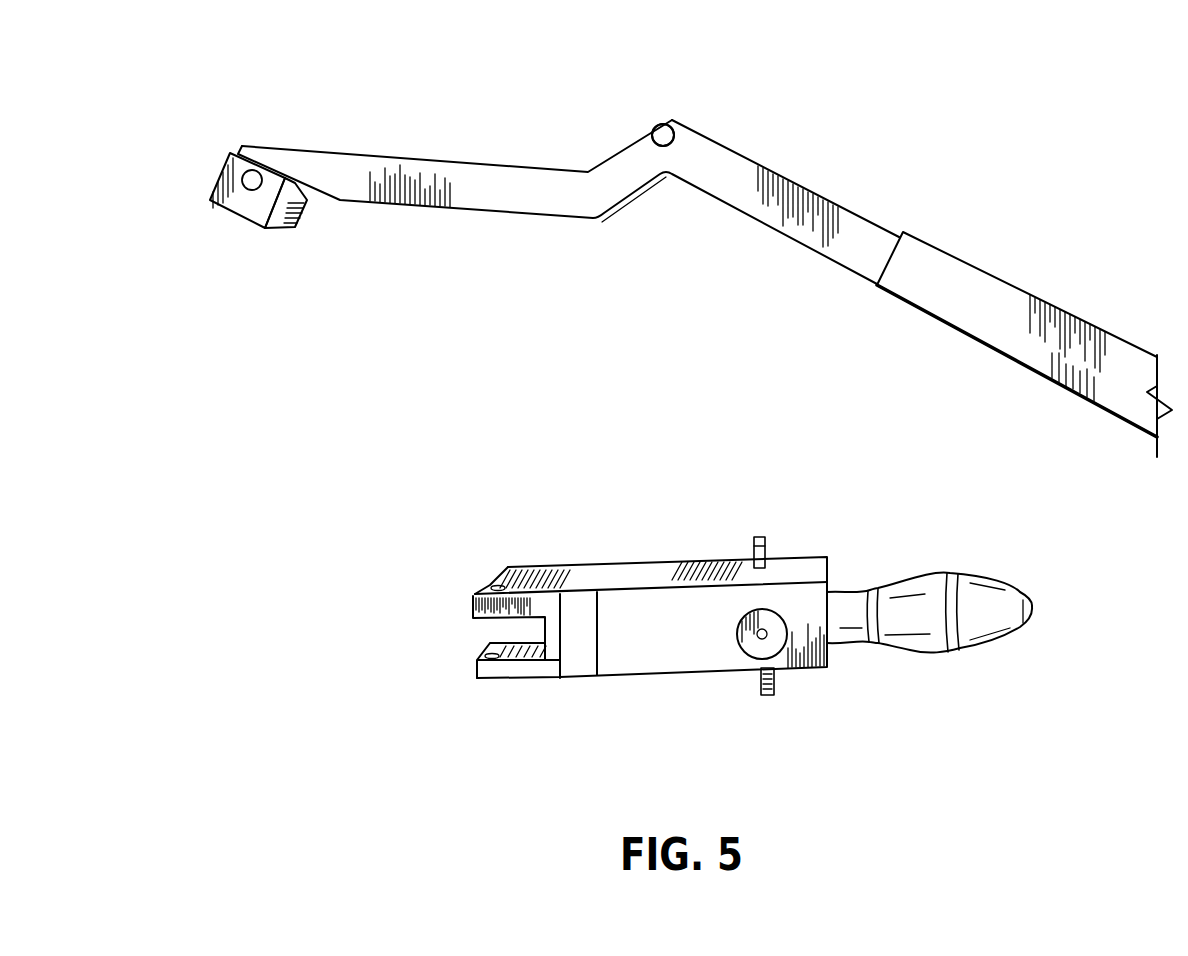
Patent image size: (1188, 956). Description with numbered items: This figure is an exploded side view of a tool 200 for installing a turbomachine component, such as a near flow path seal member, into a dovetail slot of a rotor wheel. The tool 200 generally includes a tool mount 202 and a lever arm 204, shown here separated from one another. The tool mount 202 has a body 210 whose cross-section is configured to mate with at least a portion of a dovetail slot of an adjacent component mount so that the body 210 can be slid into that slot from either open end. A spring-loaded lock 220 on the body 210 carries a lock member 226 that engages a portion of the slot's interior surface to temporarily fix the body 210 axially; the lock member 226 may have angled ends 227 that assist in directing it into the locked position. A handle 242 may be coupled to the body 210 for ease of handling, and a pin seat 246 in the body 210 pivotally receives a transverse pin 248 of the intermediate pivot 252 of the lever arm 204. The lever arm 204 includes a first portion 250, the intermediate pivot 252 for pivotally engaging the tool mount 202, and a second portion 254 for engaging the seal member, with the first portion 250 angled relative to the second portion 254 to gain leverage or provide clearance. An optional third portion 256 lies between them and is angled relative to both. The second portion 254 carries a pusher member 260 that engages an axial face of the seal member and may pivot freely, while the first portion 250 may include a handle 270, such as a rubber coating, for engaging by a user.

The tool 200 is at (573, 146).
The tool mount 202 is at (678, 696).
The lever arm 204 is at (884, 200).
The body 210 is at (608, 652).
The spring-loaded lock 220 is at (777, 656).
The lock member 226 is at (748, 548).
The angled ends 227 is at (762, 548).
The handle 242 is at (947, 652).
The pin seat 246 is at (473, 615).
The transverse pin 248 is at (671, 122).
The first portion 250 is at (1098, 340).
The intermediate pivot 252 is at (663, 135).
The second portion 254 is at (324, 162).
The third portion 256 is at (654, 208).
The pusher member 260 is at (228, 176).
The handle 270 is at (975, 300).